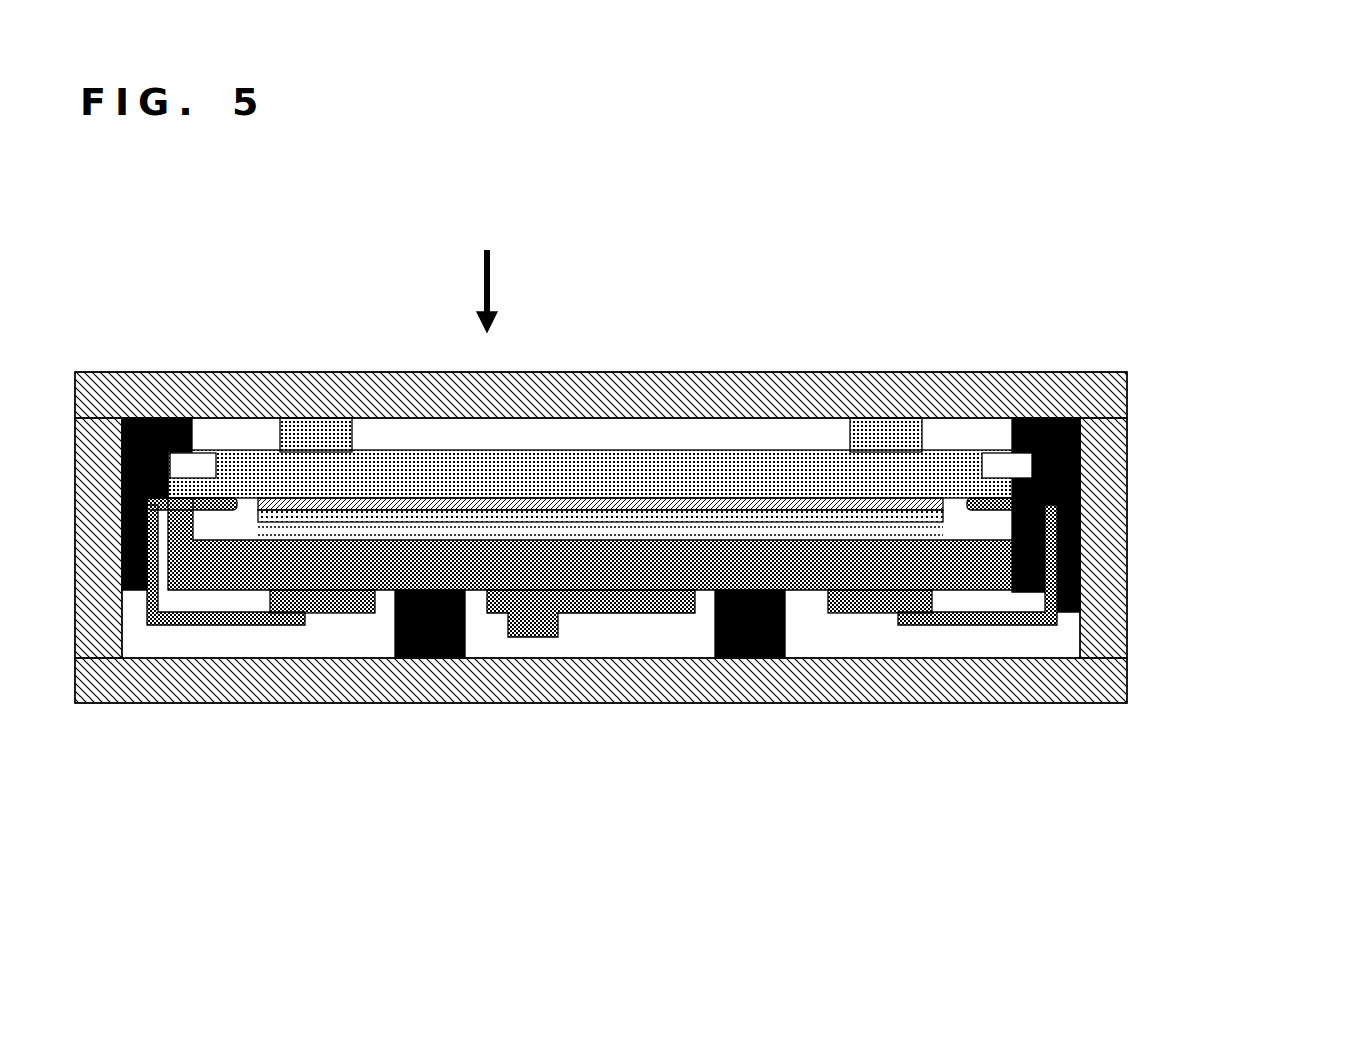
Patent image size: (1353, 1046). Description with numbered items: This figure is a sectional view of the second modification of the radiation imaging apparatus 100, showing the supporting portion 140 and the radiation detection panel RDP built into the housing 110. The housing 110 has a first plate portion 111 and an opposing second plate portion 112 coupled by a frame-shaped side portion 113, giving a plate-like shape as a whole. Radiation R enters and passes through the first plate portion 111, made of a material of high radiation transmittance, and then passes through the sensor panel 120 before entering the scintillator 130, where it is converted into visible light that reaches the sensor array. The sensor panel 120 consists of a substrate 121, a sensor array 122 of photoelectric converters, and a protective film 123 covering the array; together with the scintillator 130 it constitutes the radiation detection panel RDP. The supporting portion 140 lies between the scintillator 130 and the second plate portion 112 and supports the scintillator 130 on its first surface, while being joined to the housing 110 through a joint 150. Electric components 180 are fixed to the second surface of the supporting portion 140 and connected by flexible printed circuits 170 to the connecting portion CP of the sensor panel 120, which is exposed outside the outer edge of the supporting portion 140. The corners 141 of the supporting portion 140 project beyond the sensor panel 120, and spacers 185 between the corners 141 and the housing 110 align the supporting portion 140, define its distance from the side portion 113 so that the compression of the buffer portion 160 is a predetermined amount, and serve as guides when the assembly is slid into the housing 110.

The radiation imaging apparatus 100 is at (709, 540).
The housing 110 is at (709, 528).
The first plate portion 111 is at (1025, 372).
The second plate portion 112 is at (1050, 695).
The side portion 113 is at (1112, 540).
The sensor panel 120 is at (600, 379).
The substrate 121 is at (475, 470).
The sensor array 122 is at (490, 507).
The protective film 123 is at (517, 517).
The scintillator 130 is at (683, 535).
The supporting portion 140 is at (935, 515).
The corner 141 is at (217, 558).
The joint 150 is at (432, 590).
The buffer portion 160 is at (315, 427).
The flexible printed circuit 170 is at (228, 504).
The electric component 180 is at (333, 590).
The spacer 185 is at (147, 418).
The connecting portion CP is at (225, 498).
The radiation detection panel RDP is at (606, 413).
The radiation R is at (478, 291).